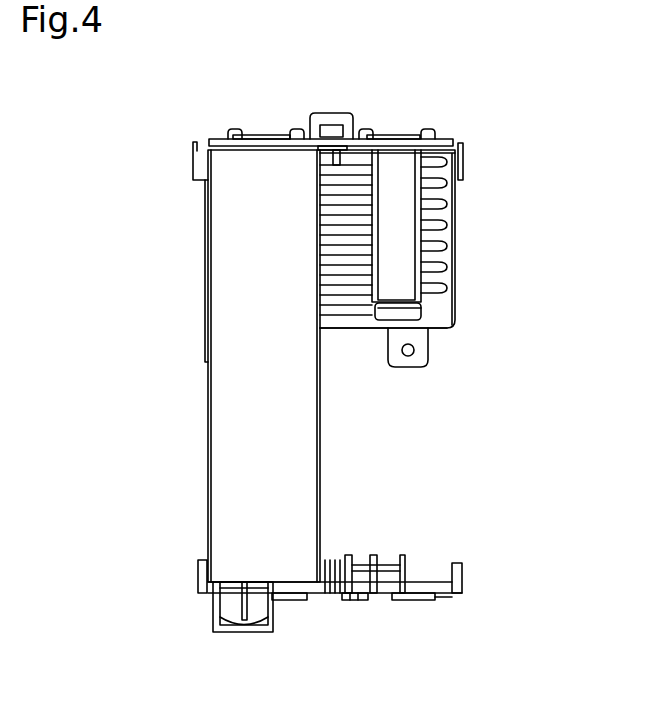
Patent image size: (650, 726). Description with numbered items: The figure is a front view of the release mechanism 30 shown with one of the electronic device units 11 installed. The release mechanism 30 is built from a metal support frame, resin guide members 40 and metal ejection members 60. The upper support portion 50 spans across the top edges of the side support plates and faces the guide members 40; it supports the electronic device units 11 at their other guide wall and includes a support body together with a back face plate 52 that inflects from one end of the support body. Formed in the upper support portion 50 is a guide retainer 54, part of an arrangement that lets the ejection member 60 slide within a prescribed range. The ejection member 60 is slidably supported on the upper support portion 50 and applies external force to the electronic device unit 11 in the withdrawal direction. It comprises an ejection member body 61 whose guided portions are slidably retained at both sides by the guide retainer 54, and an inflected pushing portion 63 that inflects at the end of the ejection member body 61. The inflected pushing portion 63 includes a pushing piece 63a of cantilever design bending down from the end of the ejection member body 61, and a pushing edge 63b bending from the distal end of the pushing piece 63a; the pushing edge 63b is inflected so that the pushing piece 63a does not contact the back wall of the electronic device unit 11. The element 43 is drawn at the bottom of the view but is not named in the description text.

The release mechanism 30 is at (219, 133).
The electronic device unit 11 is at (225, 418).
The upper support portion 50 is at (450, 140).
The back face plate 52 is at (352, 330).
The guide retainer 54 is at (432, 131).
The ejection member 60 is at (385, 110).
The ejection member body 61 is at (398, 138).
The inflected pushing portion 63 is at (475, 237).
The pushing piece 63a is at (392, 234).
The pushing edge 63b is at (451, 308).
The guide member 40 is at (335, 630).
The connector 43 is at (378, 593).